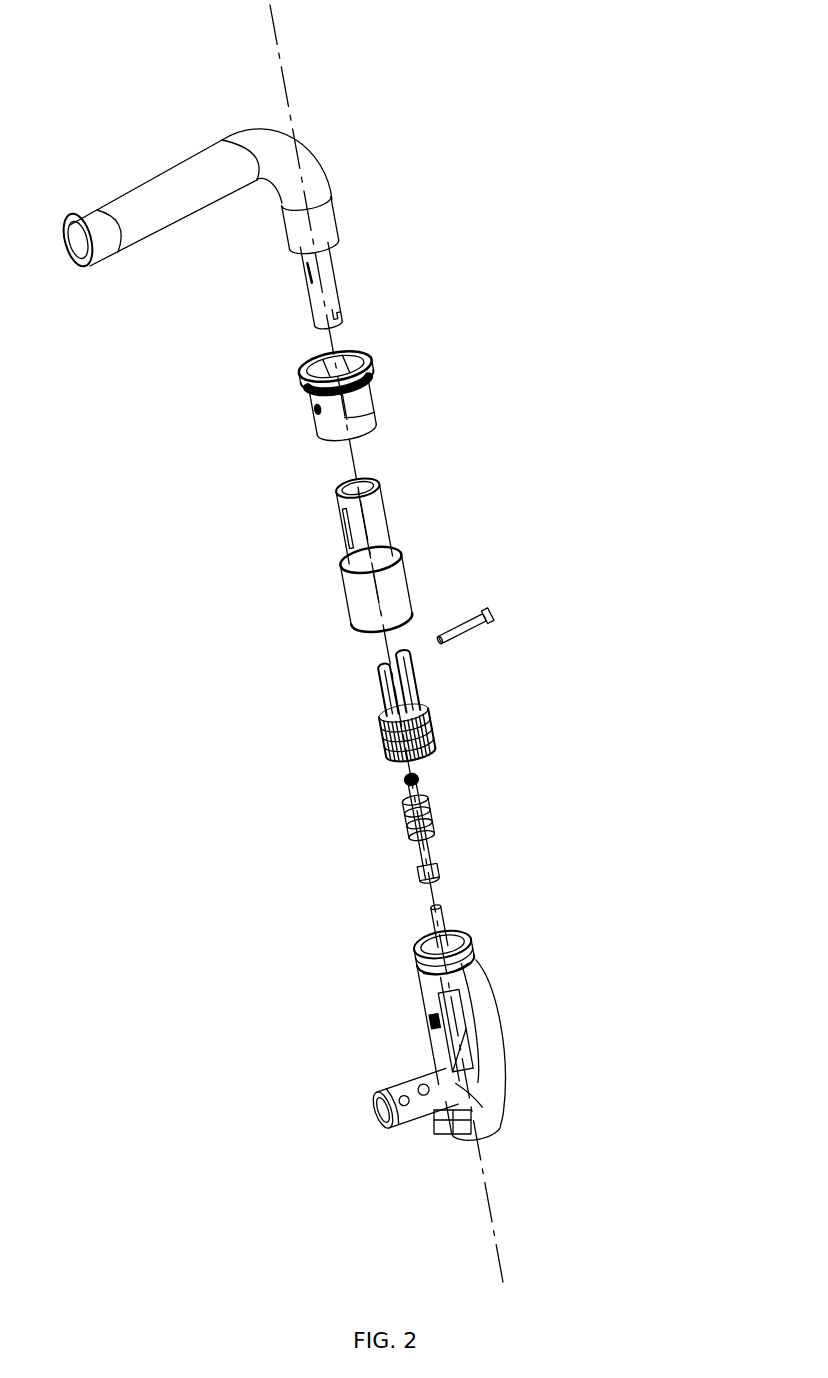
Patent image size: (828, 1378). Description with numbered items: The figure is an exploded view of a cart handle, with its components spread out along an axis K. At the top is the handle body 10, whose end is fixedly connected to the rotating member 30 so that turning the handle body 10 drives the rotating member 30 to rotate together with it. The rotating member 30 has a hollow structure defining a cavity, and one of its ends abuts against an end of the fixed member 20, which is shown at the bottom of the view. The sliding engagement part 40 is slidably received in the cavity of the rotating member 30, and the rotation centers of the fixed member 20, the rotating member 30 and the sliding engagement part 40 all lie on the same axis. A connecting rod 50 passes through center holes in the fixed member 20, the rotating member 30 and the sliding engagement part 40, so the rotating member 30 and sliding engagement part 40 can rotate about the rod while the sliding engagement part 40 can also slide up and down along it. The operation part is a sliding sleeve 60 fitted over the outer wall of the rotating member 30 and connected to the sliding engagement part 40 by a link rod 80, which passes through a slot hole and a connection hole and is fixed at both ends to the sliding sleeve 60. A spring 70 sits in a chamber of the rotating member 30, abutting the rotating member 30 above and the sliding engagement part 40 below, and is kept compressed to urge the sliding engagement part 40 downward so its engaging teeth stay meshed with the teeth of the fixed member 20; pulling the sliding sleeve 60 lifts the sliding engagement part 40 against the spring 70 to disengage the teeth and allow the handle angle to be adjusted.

The axis K is at (280, 55).
The handle body 10 is at (328, 290).
The fixed member 20 is at (477, 953).
The rotating member 30 is at (382, 540).
The sliding engagement part 40 is at (423, 720).
The connecting rod 50 is at (435, 853).
The sliding sleeve 60 is at (367, 405).
The spring 70 is at (428, 808).
The link rod 80 is at (497, 612).